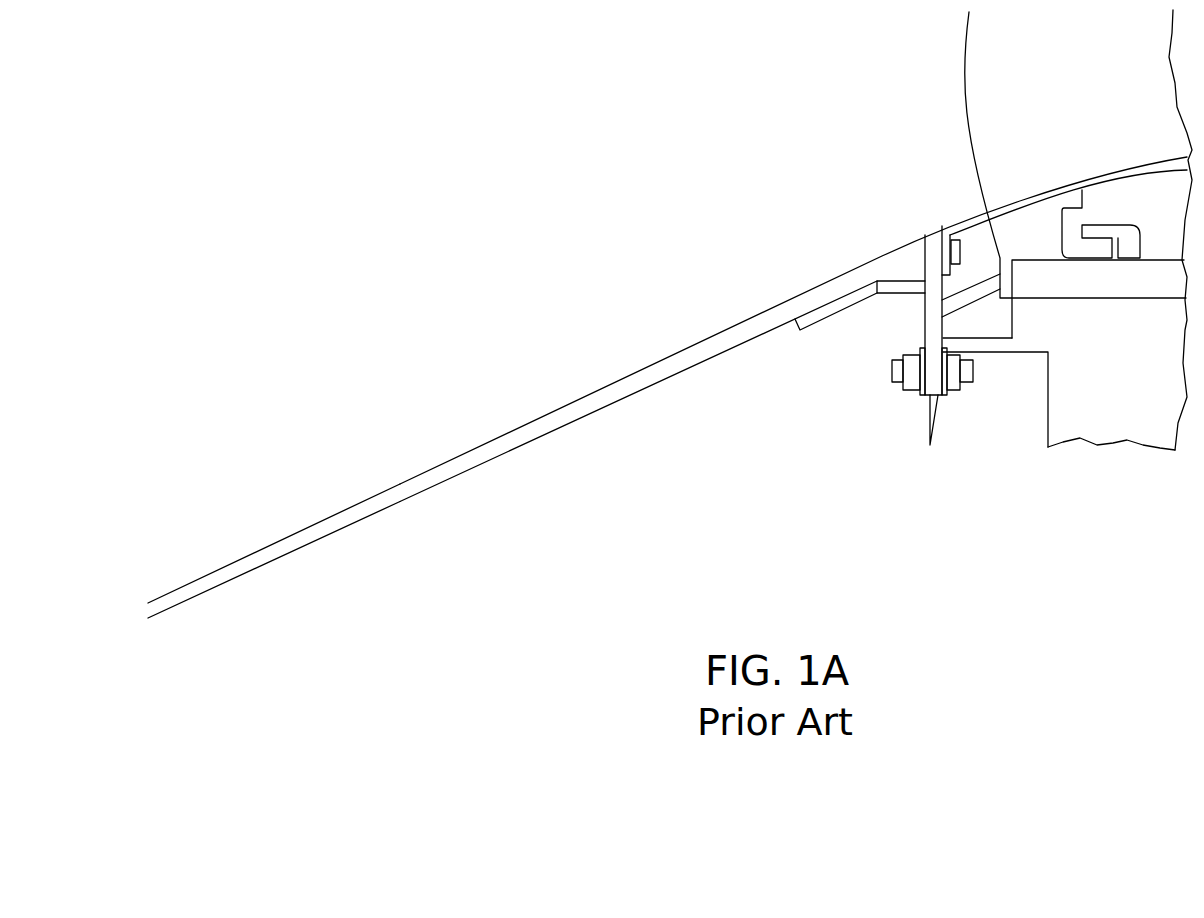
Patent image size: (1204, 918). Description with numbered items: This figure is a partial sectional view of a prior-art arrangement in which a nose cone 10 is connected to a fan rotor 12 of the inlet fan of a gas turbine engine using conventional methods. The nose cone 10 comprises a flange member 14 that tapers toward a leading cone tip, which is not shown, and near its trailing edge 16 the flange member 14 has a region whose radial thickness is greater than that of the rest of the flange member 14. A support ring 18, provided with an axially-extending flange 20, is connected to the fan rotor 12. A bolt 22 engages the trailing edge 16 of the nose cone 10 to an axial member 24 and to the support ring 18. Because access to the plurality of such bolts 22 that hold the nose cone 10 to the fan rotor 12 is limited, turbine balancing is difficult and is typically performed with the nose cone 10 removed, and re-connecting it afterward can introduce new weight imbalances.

The nose cone 10 is at (412, 424).
The fan rotor 12 is at (1130, 428).
The flange member 14 is at (257, 551).
The trailing edge 16 is at (873, 235).
The support ring 18 is at (937, 387).
The axially-extending flange 20 is at (822, 315).
The bolt 22 is at (960, 249).
The axial member 24 is at (1103, 173).